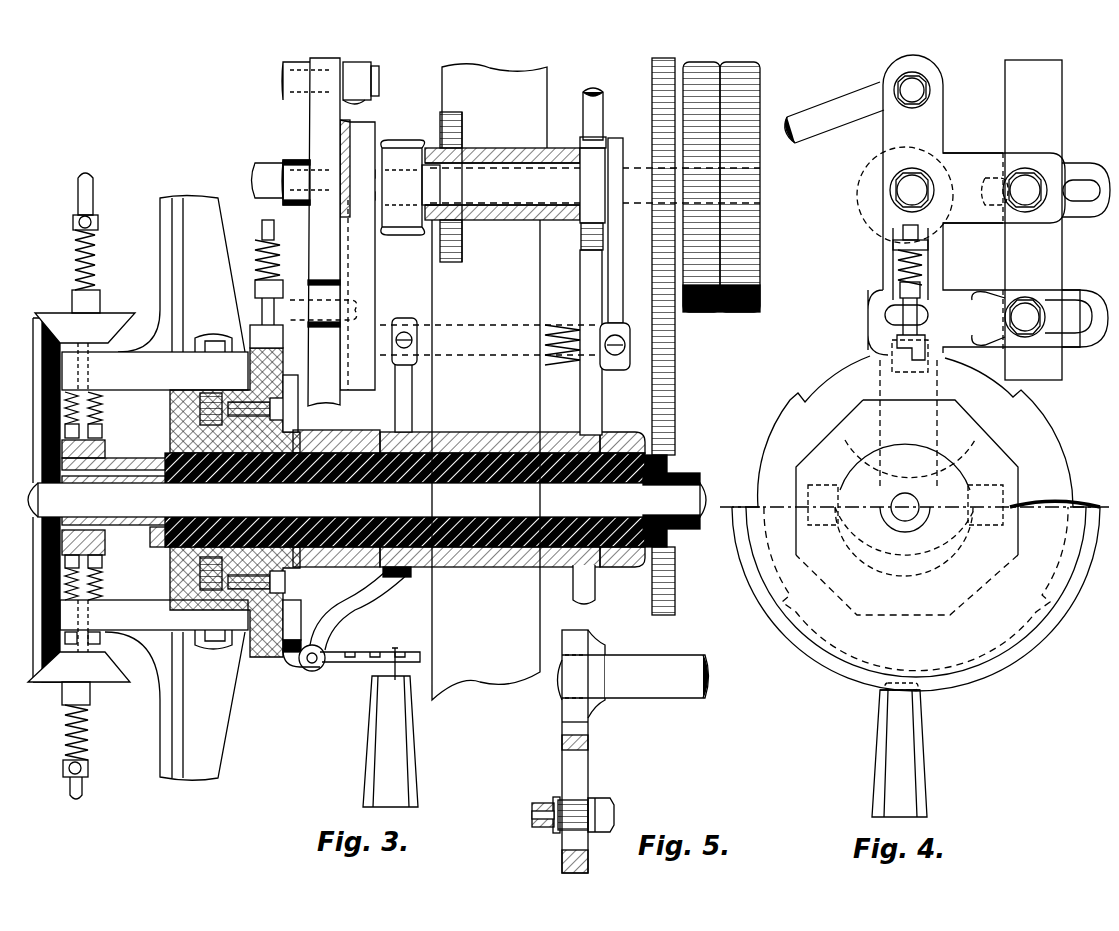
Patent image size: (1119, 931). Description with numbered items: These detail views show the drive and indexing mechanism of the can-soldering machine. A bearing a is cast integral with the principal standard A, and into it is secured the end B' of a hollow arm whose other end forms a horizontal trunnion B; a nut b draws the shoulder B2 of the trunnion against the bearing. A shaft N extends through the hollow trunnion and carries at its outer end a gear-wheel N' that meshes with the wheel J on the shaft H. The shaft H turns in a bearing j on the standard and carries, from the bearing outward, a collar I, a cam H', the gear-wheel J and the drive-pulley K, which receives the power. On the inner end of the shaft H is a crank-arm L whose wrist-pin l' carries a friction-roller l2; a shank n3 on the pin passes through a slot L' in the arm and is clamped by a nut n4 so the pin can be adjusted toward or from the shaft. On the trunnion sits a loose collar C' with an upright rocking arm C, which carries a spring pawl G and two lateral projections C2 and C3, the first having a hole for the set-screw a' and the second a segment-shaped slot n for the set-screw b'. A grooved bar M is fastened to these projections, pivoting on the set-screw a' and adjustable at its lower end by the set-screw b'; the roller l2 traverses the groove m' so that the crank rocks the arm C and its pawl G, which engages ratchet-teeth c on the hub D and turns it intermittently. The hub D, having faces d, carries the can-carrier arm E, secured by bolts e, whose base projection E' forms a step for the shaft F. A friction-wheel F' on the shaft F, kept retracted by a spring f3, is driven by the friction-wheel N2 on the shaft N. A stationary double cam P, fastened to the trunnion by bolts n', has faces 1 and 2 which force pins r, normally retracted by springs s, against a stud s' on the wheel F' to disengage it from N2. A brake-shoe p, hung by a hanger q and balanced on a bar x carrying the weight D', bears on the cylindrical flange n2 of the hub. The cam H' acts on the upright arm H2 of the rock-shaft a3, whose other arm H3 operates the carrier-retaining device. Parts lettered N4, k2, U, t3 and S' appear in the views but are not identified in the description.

In FIG. 3, the shaft N is at (367, 500).
In FIG. 4, the shaft N is at (905, 524).
In FIG. 3, the gear-wheel N' is at (671, 535).
In FIG. 3, the friction-wheel N2 is at (40, 400).
In FIG. 4, the cap N4 is at (860, 665).
In FIG. 3, the radial arm E is at (175, 488).
In FIG. 3, the projection E' is at (154, 491).
In FIG. 3, the bolts e is at (213, 491).
In FIG. 3, the shaft F is at (84, 486).
In FIG. 3, the friction-wheel F' is at (81, 497).
In FIG. 3, the spring f3 is at (82, 735).
In FIG. 3, the spring s is at (88, 496).
In FIG. 3, the movable pins r is at (87, 497).
In FIG. 3, the stud s' is at (92, 645).
In FIG. 3, the stationary cam P is at (86, 497).
In FIG. 3, the bolts n' is at (116, 494).
In FIG. 3, the hub D is at (235, 502).
In FIG. 3, the weight D' is at (390, 741).
In FIG. 4, the weight D' is at (899, 753).
In FIG. 3, the slot k2 is at (294, 403).
In FIG. 3, the cylindrical flange n2 is at (292, 628).
In FIG. 3, the trunnion B is at (395, 514).
In FIG. 3, the end of hollow arm B' is at (490, 567).
In FIG. 3, the shoulder B2 is at (408, 570).
In FIG. 3, the upright arm C is at (311, 232).
In FIG. 4, the upright arm C is at (968, 205).
In FIG. 3, the box or collar C' is at (336, 489).
In FIG. 3, the lateral projection C2 is at (300, 168).
In FIG. 4, the lateral projection C2 is at (981, 194).
In FIG. 3, the lateral projection C3 is at (320, 290).
In FIG. 4, the lateral projection C3 is at (1082, 340).
In FIG. 3, the bearing a is at (490, 433).
In FIG. 3, the set-screw a' is at (271, 171).
In FIG. 4, the set-screw a' is at (1025, 190).
In FIG. 3, the rock-shaft a3 is at (490, 344).
In FIG. 3, the nut b is at (622, 490).
In FIG. 4, the set-screw b' is at (1025, 317).
In FIG. 3, the rod U is at (365, 108).
In FIG. 4, the rod U is at (834, 122).
In FIG. 3, the crank-arm L is at (403, 187).
In FIG. 5, the crank-arm L is at (565, 741).
In FIG. 4, the crank-arm L is at (1082, 229).
In FIG. 5, the slot L' is at (585, 751).
In FIG. 4, the slot L' is at (1086, 190).
In FIG. 3, the friction-roller l2 is at (360, 170).
In FIG. 5, the friction-roller l2 is at (540, 828).
In FIG. 5, the wrist-pin l' is at (533, 814).
In FIG. 3, the bar M is at (357, 255).
In FIG. 4, the bar M is at (1033, 220).
In FIG. 3, the groove m' is at (378, 232).
In FIG. 3, the nut n4 is at (432, 183).
In FIG. 5, the nut n4 is at (614, 815).
In FIG. 5, the shank n3 is at (570, 819).
In FIG. 4, the segment-shaped slot n is at (1068, 317).
In FIG. 3, the shaft H is at (592, 184).
In FIG. 5, the shaft H is at (657, 676).
In FIG. 3, the cam H' is at (621, 245).
In FIG. 3, the upright arm H2 is at (613, 256).
In FIG. 3, the arm H3 is at (405, 410).
In FIG. 3, the collar I is at (592, 291).
In FIG. 3, the gear-wheel J is at (652, 275).
In FIG. 3, the drive-pulley K is at (700, 312).
In FIG. 3, the bearing j is at (490, 218).
In FIG. 3, the screw t3 is at (584, 235).
In FIG. 3, the shaft S' is at (601, 343).
In FIG. 3, the principal standard A is at (489, 382).
In FIG. 3, the hanger q is at (360, 611).
In FIG. 3, the brake-shoe p is at (290, 660).
In FIG. 3, the bar x is at (370, 655).
In FIG. 3, the spring latch or pawl G is at (235, 332).
In FIG. 4, the spring latch or pawl G is at (897, 345).
In FIG. 4, the ratchet-teeth c is at (903, 379).
In FIG. 4, the sides or faces d is at (980, 438).
In FIG. 4, the cam face 1 is at (905, 504).
In FIG. 4, the cam face 2 is at (975, 455).